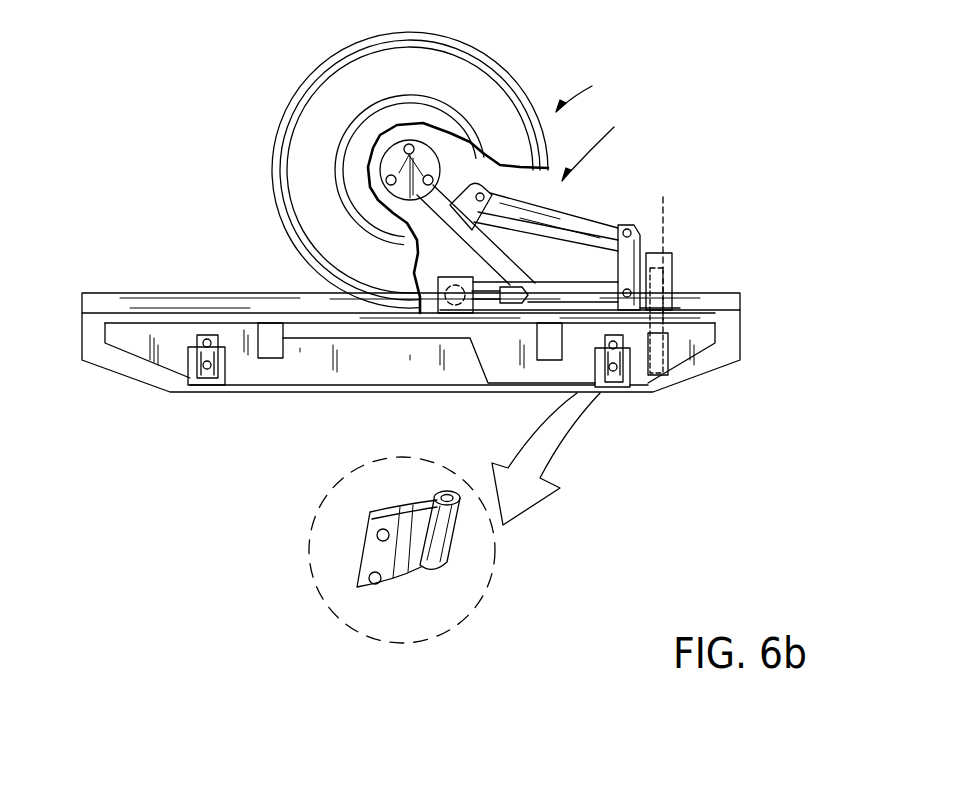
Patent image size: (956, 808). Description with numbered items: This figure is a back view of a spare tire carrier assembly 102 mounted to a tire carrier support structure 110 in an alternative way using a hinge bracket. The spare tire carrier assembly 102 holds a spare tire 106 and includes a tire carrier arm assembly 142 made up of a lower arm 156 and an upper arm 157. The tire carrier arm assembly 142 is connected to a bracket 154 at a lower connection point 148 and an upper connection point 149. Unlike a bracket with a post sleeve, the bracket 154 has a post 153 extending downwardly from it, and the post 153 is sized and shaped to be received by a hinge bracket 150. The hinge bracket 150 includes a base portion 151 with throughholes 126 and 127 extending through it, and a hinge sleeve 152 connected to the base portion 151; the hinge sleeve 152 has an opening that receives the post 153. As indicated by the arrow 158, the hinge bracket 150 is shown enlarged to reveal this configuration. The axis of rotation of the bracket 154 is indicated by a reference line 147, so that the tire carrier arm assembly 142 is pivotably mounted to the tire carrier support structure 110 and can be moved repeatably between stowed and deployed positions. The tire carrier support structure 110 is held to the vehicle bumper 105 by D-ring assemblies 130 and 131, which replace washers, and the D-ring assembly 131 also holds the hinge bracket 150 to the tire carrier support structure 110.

The spare tire carrier assembly 102 is at (591, 96).
The vehicle bumper 105 is at (223, 308).
The spare tire 106 is at (502, 96).
The tire carrier support structure 110 is at (153, 330).
The throughhole 126 is at (376, 535).
The throughhole 127 is at (354, 587).
The D-ring assembly 130 is at (210, 382).
The D-ring assembly 131 is at (610, 382).
The tire carrier arm assembly 142 is at (606, 148).
The reference line 147 is at (663, 203).
The lower connection point 148 is at (626, 289).
The upper connection point 149 is at (623, 227).
The hinge bracket 150 is at (469, 503).
The base portion 151 is at (403, 528).
The hinge sleeve 152 is at (448, 537).
The post 153 is at (655, 289).
The bracket 154 is at (637, 250).
The lower arm 156 is at (368, 232).
The upper arm 157 is at (573, 223).
The arrow 158 is at (553, 421).